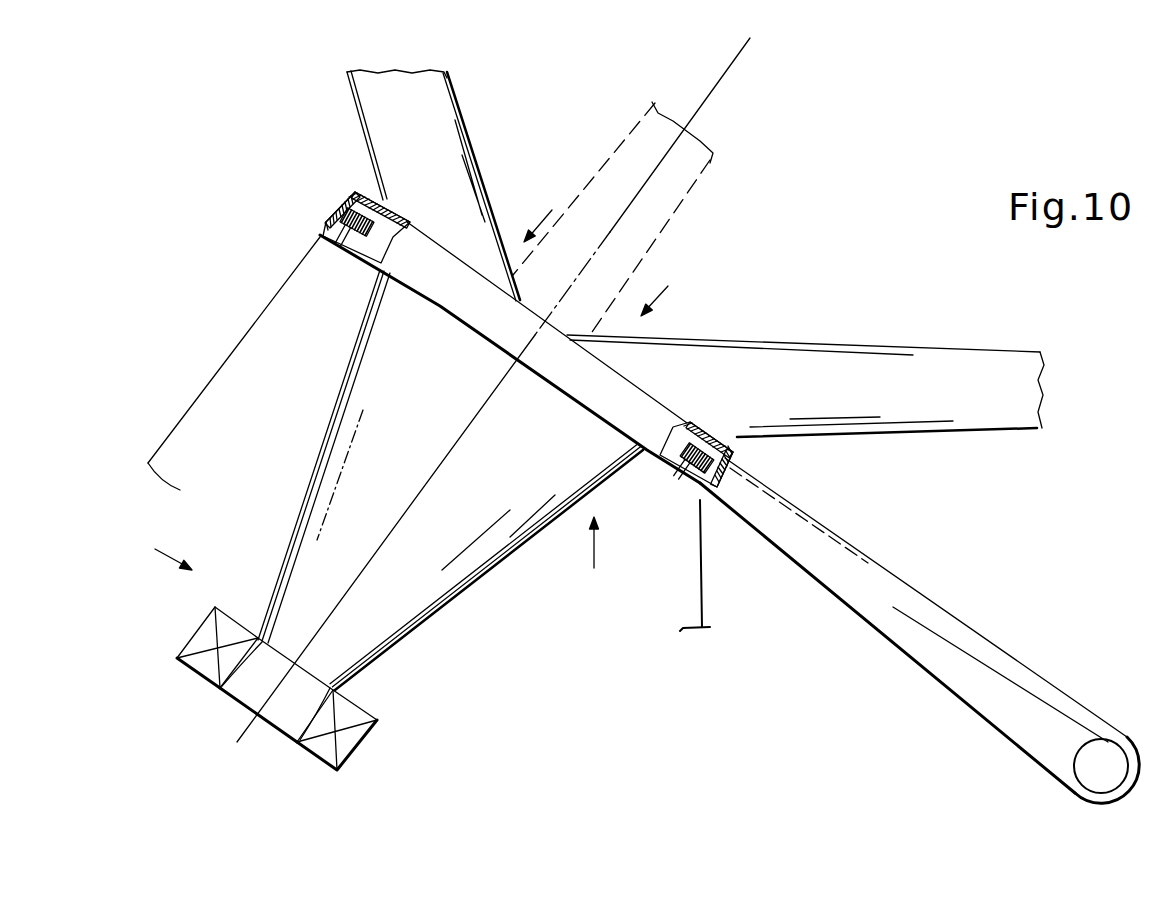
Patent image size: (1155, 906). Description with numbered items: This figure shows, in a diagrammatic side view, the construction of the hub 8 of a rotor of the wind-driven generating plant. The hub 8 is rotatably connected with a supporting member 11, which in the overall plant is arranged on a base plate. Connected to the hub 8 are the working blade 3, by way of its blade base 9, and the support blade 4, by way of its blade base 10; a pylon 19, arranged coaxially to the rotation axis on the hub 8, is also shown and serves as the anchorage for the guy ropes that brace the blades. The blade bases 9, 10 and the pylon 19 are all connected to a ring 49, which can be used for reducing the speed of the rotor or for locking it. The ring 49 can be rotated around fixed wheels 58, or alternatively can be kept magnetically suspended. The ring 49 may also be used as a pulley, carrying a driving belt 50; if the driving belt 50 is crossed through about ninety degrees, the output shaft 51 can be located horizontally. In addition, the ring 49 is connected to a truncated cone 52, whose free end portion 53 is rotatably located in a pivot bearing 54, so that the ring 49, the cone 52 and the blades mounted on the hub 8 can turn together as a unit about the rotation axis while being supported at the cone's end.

The working blade 3 is at (432, 90).
The support blade 4 is at (900, 357).
The hub 8 is at (596, 562).
The blade base 9 is at (543, 210).
The blade base 10 is at (671, 280).
The supporting member 11 is at (238, 342).
The pylon 19 is at (708, 168).
The ring 49 is at (355, 198).
The driving belt 50 is at (923, 598).
The output shaft 51 is at (1110, 753).
The truncated cone 52 is at (307, 517).
The free end portion 53 is at (384, 592).
The pivot bearing 54 is at (202, 638).
The fixed wheel 58 is at (340, 217).